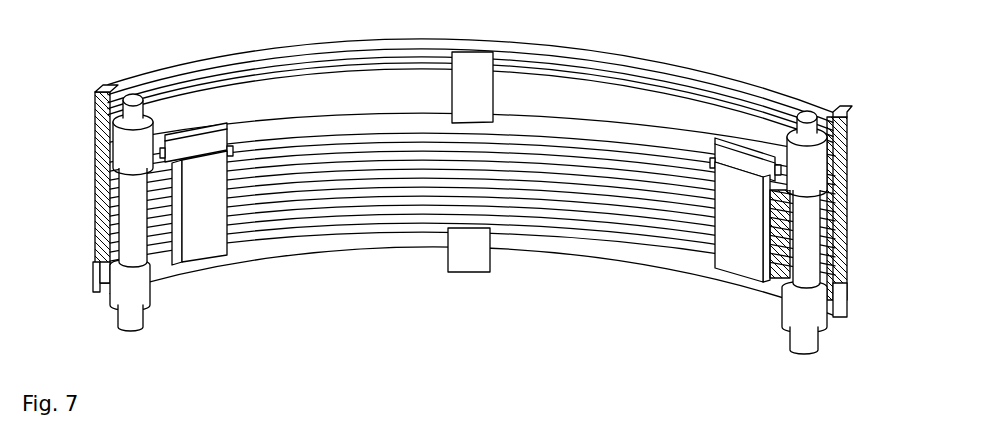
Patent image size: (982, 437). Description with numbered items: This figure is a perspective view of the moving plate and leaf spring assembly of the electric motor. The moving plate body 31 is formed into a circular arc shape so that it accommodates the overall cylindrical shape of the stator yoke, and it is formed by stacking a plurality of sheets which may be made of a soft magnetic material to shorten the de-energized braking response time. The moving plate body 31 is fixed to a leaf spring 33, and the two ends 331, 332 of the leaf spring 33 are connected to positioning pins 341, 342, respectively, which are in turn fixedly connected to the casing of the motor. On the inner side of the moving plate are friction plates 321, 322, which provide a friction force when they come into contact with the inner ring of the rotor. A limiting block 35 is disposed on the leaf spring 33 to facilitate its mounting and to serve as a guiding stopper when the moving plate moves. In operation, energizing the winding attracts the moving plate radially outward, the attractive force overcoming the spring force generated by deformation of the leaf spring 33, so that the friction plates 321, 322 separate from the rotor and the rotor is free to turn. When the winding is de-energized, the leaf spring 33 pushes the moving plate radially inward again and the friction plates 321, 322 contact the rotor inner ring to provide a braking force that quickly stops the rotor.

The moving plate body 31 is at (380, 193).
The leaf spring 33 is at (365, 98).
The limiting block 35 is at (470, 88).
The friction plate 321 is at (213, 217).
The friction plate 322 is at (738, 228).
The end of the leaf spring 331 is at (137, 145).
The end of the leaf spring 332 is at (802, 163).
The positioning pin 341 is at (138, 110).
The positioning pin 342 is at (803, 127).